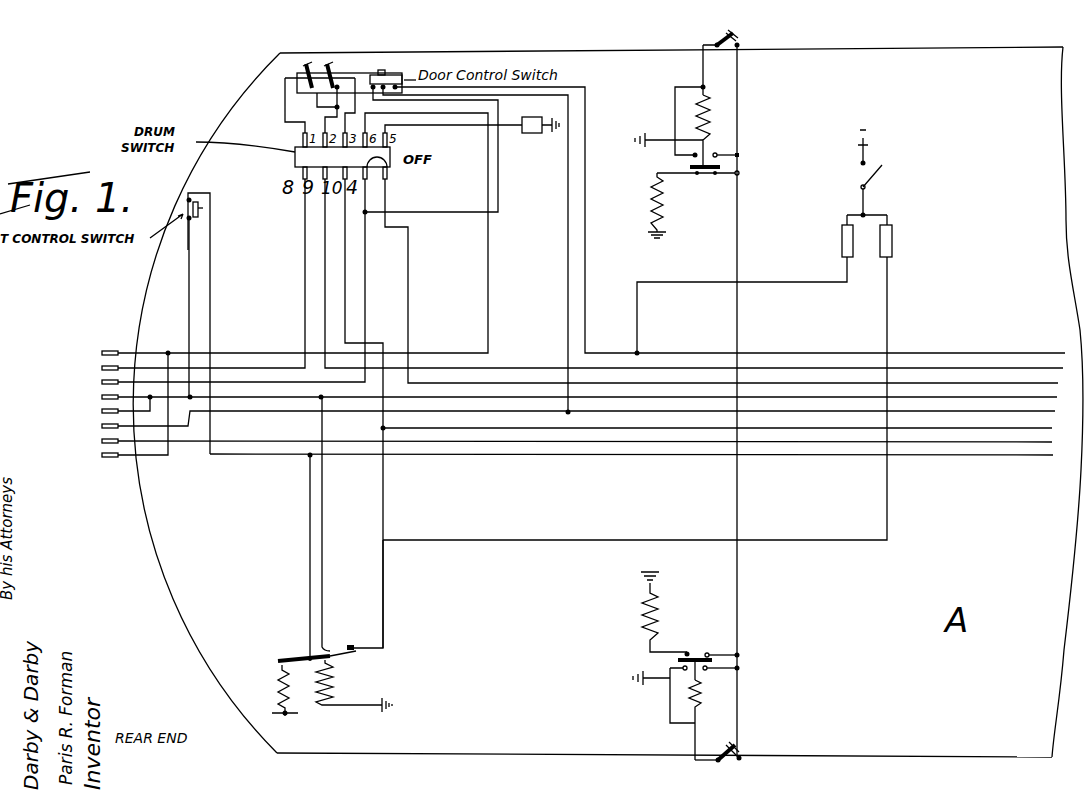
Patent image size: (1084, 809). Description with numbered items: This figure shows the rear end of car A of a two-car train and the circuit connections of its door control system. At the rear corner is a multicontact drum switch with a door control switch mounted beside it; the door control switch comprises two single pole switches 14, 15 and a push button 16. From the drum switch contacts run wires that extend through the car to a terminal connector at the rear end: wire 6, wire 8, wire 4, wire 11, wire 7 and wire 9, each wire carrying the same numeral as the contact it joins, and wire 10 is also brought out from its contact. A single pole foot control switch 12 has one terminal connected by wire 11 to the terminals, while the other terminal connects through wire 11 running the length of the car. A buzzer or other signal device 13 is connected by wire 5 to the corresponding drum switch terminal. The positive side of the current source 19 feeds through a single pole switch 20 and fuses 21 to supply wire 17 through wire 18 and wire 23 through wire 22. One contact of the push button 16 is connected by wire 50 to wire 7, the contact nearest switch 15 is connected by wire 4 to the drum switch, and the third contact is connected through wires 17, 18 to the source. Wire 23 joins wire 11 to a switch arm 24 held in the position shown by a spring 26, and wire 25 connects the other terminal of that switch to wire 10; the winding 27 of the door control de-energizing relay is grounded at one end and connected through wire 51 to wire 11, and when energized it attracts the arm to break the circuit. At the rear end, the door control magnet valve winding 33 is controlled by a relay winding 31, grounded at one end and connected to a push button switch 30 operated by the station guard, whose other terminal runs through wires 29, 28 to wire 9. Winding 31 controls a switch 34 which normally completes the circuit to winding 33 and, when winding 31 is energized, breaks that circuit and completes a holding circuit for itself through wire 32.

The wire 4 is at (500, 208).
The wire 5 is at (474, 129).
The wire 6 is at (493, 332).
The wire 7 is at (390, 177).
The wire 8 is at (299, 261).
The wire 9 is at (319, 280).
The wire 10 is at (352, 280).
The wire 11 is at (188, 318).
The foot control switch 12 is at (203, 209).
The signal device 13 is at (532, 134).
The single pole switch 14 is at (305, 61).
The single pole switch 15 is at (334, 62).
The push button 16 is at (386, 70).
The wire 17 is at (587, 109).
The wire 18 is at (741, 306).
The current source 19 is at (868, 151).
The single pole switch 20 is at (881, 183).
The fuses 21 is at (880, 260).
The wire 22 is at (897, 311).
The wire 23 is at (305, 612).
The switch arm 24 is at (363, 657).
The wire 25 is at (395, 618).
The spring 26 is at (278, 682).
The winding 27 is at (335, 685).
The wire 28 is at (742, 557).
The wire 29 is at (750, 716).
The push button switch 30 is at (730, 771).
The relay winding 31 is at (697, 702).
The wire 32 is at (668, 700).
The magnet valve winding 33 is at (640, 624).
The switch 34 is at (695, 657).
The wire 50 is at (567, 184).
The wire 51 is at (331, 613).